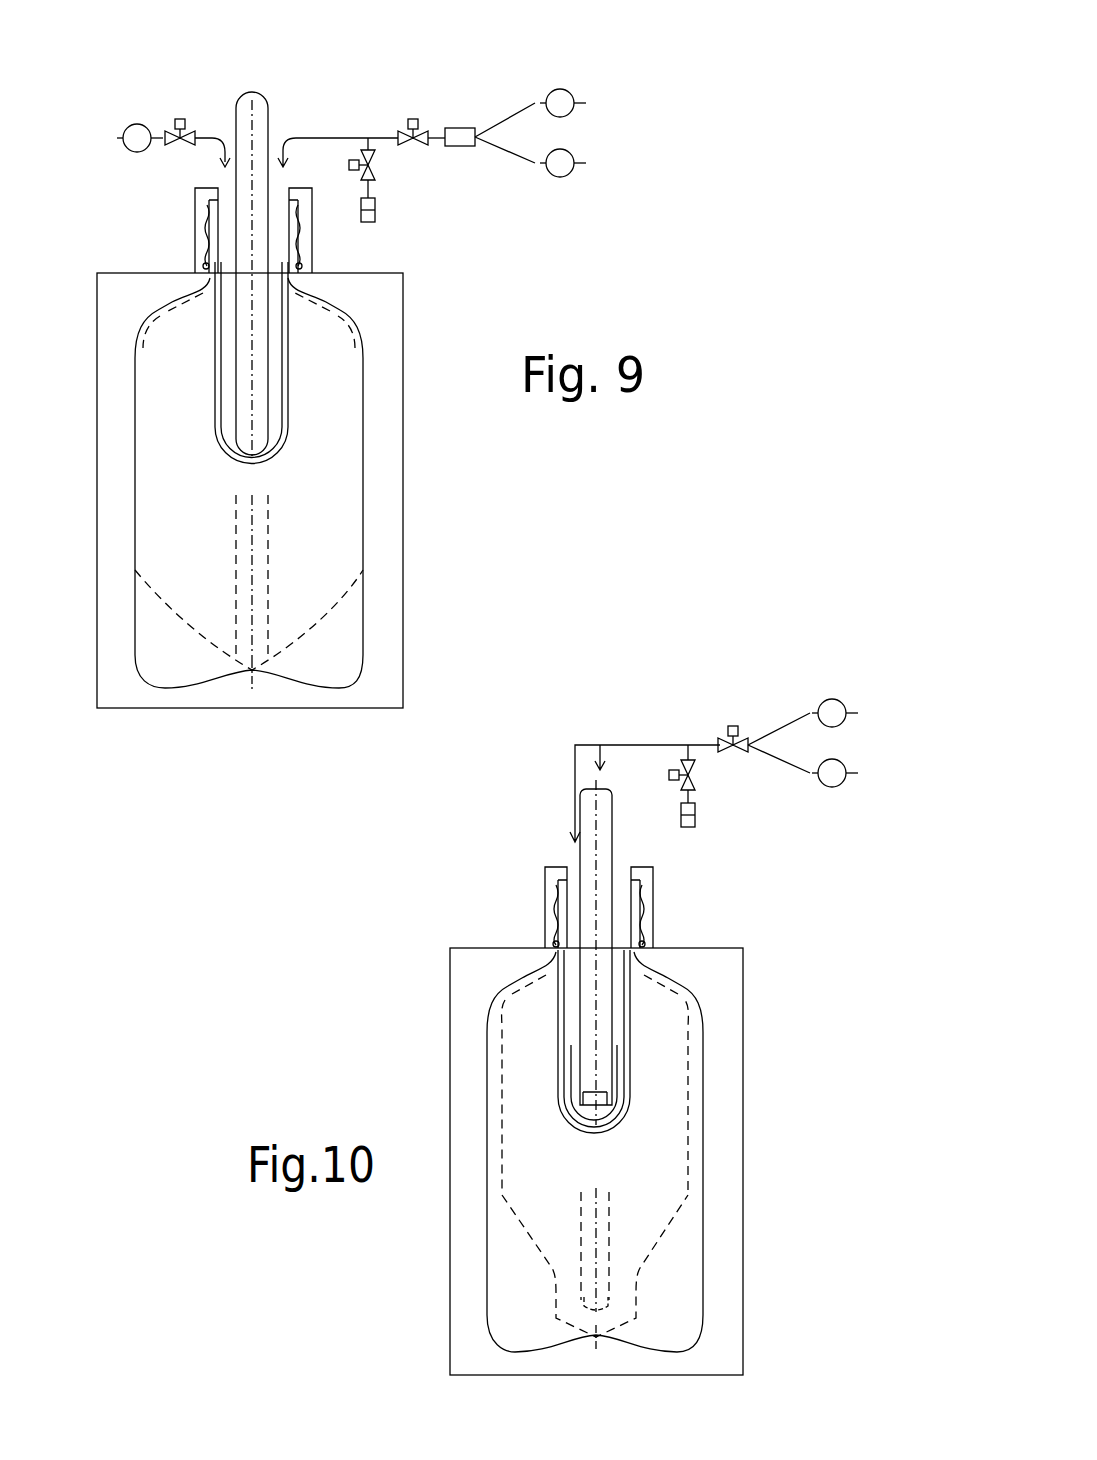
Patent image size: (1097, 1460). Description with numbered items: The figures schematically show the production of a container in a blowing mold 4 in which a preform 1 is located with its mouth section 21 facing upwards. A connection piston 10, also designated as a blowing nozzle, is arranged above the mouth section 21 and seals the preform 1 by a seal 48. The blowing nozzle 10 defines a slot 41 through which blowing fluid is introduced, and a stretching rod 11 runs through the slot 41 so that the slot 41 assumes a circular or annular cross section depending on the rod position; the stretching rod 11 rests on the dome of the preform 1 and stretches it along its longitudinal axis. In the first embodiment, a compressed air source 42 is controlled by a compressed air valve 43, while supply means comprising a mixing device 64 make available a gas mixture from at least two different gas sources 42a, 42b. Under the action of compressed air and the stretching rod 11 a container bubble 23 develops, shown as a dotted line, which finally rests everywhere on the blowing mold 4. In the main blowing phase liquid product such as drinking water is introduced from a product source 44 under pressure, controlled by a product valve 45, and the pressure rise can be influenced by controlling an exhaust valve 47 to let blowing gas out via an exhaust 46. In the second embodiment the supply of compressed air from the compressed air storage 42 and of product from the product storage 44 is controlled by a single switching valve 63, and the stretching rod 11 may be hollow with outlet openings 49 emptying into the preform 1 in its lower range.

In FIG. 9, the preform 1 is at (290, 372).
In FIG. 10, the preform 1 is at (630, 1012).
In FIG. 9, the blowing mold 4 is at (385, 318).
In FIG. 10, the blowing mold 4 is at (715, 1332).
In FIG. 9, the connection piston 10 is at (198, 205).
In FIG. 10, the connection piston 10 is at (548, 868).
In FIG. 9, the stretching rod 11 is at (258, 410).
In FIG. 10, the stretching rod 11 is at (605, 1042).
In FIG. 9, the mouth section 21 is at (300, 230).
In FIG. 10, the mouth section 21 is at (552, 922).
In FIG. 9, the container bubble 23 is at (330, 618).
In FIG. 10, the container bubble 23 is at (668, 1218).
In FIG. 9, the slot 41 is at (226, 246).
In FIG. 10, the slot 41 is at (560, 892).
In FIG. 10, the compressed air source 42 is at (832, 698).
In FIG. 9, the gas source 42a is at (560, 89).
In FIG. 9, the gas source 42b is at (558, 177).
In FIG. 9, the compressed air valve 43 is at (415, 117).
In FIG. 9, the product source 44 is at (137, 125).
In FIG. 10, the product source 44 is at (830, 788).
In FIG. 9, the product valve 45 is at (180, 118).
In FIG. 9, the exhaust 46 is at (376, 205).
In FIG. 10, the exhaust 46 is at (696, 820).
In FIG. 9, the exhaust valve 47 is at (352, 158).
In FIG. 10, the exhaust valve 47 is at (697, 780).
In FIG. 9, the seal 48 is at (197, 268).
In FIG. 10, the seal 48 is at (546, 940).
In FIG. 10, the outlet openings 49 is at (602, 1108).
In FIG. 10, the switching valve 63 is at (733, 722).
In FIG. 9, the mixing device 64 is at (456, 148).